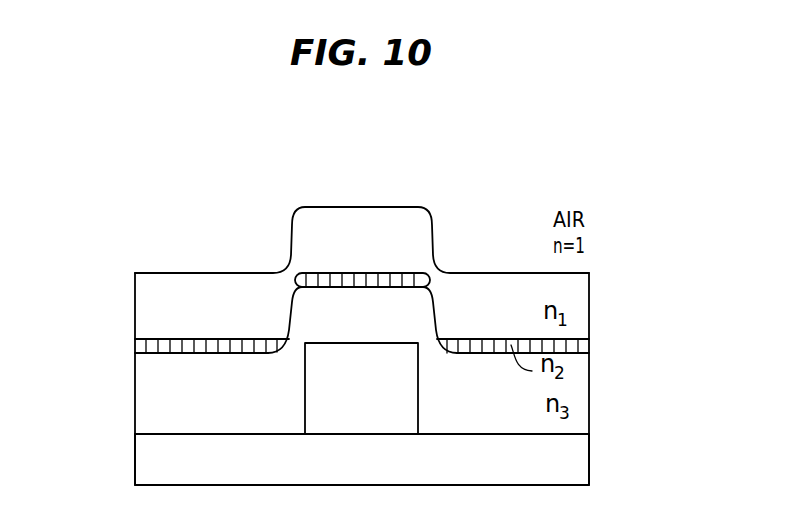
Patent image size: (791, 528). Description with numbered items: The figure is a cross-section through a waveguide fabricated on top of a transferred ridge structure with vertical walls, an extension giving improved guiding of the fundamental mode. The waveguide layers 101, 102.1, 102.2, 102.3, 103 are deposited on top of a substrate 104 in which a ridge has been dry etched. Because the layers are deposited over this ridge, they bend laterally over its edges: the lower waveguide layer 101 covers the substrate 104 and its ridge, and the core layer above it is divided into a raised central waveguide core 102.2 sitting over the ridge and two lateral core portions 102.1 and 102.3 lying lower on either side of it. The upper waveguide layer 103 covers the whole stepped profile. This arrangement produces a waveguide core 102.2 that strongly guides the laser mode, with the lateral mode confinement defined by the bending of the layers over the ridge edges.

The waveguide layer 101 is at (150, 393).
The waveguide layer 102.1 is at (589, 342).
The waveguide core 102.2 is at (344, 278).
The waveguide layer 102.3 is at (140, 345).
The waveguide layer 103 is at (143, 303).
The substrate 104 is at (147, 456).